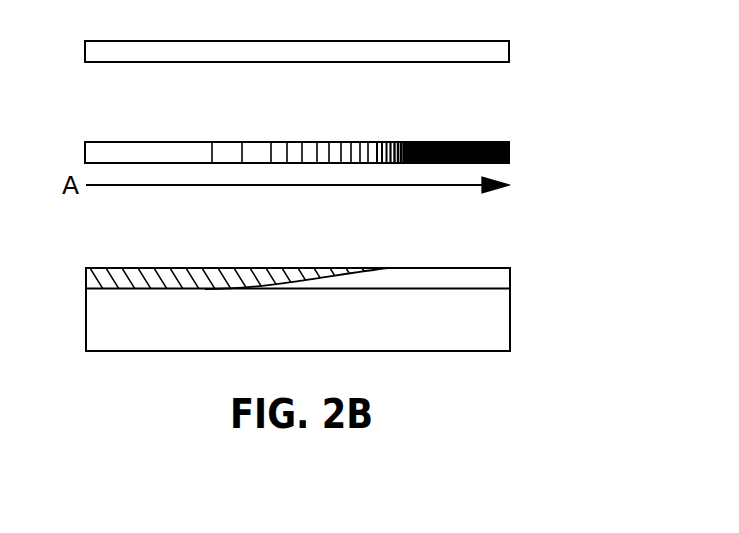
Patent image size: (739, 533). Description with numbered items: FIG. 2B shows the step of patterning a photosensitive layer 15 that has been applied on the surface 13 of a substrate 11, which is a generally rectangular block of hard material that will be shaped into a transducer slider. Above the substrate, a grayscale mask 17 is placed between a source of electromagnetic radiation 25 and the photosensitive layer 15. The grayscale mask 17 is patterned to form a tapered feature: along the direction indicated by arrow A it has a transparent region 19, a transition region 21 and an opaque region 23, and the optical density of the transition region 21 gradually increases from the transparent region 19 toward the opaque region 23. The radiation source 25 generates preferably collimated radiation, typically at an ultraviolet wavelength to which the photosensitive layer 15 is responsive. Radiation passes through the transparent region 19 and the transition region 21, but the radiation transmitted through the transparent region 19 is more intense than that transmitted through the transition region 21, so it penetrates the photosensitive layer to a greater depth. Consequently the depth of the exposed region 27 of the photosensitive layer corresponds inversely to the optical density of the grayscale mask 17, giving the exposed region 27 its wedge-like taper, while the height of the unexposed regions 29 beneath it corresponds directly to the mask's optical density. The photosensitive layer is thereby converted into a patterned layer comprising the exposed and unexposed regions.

The substrate 11 is at (342, 276).
The surface 13 is at (470, 287).
The photosensitive layer 15 is at (393, 274).
The grayscale mask 17 is at (340, 125).
The transparent region 19 is at (143, 142).
The transition region 21 is at (295, 142).
The opaque region 23 is at (443, 142).
The source of electromagnetic radiation 25 is at (498, 51).
The exposed region 27 is at (205, 272).
The unexposed regions 29 is at (435, 278).